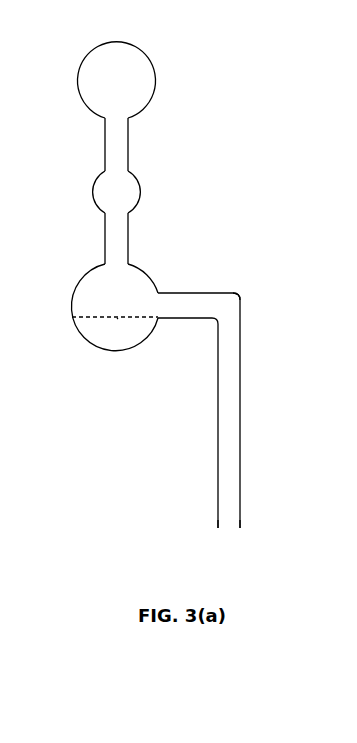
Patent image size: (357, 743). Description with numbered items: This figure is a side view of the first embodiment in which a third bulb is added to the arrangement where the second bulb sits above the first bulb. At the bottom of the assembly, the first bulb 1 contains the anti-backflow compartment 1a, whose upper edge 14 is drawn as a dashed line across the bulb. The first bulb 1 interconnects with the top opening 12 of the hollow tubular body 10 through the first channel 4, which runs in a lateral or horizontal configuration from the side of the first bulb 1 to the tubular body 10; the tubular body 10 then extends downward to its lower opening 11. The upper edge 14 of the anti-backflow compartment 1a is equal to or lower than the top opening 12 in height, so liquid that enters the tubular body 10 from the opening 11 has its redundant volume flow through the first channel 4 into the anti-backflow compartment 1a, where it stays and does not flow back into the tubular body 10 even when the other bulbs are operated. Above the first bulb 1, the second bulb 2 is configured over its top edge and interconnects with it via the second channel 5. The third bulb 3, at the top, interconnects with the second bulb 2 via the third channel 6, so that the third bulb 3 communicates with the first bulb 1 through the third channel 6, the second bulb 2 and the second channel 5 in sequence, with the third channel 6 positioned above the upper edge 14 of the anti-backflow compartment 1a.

The first bulb 1 is at (92, 283).
The anti-backflow compartment 1a is at (95, 328).
The second bulb 2 is at (132, 192).
The third bulb 3 is at (143, 62).
The first channel 4 is at (193, 306).
The second channel 5 is at (118, 242).
The third channel 6 is at (118, 143).
The tubular body 10 is at (230, 417).
The opening 11 is at (230, 525).
The top opening 12 is at (228, 312).
The upper edge 14 is at (117, 318).